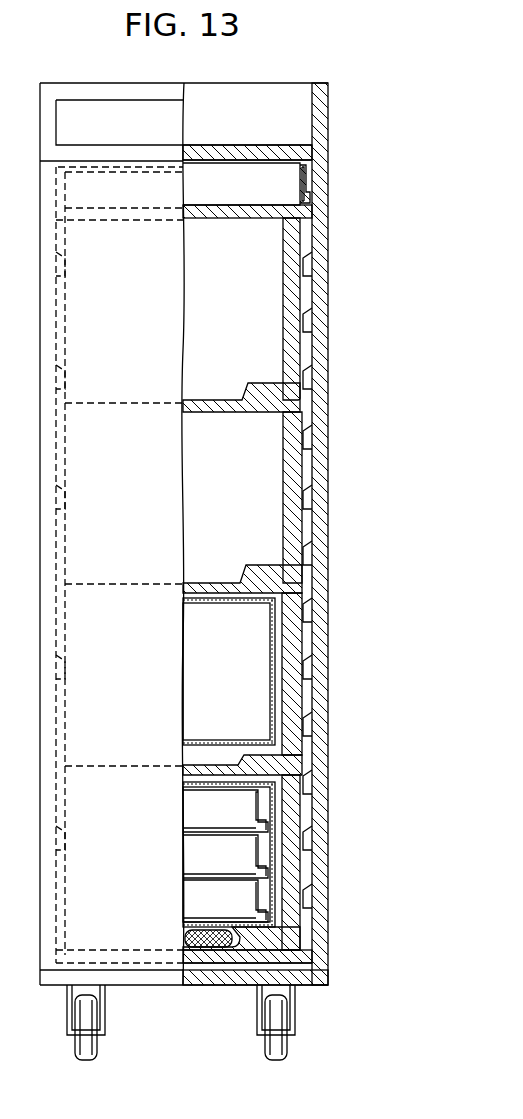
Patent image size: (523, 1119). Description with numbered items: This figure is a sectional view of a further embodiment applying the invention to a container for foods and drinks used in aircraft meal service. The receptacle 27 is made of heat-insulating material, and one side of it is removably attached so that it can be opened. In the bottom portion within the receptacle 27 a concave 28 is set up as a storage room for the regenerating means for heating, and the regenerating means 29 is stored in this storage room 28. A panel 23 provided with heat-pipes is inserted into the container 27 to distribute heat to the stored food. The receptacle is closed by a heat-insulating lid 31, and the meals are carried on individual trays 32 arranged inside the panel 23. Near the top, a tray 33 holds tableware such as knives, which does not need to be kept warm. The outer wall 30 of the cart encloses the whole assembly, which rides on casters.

The panel 23 is at (280, 653).
The receptacle 27 is at (293, 463).
The concave 28 is at (225, 759).
The regenerating means 29 is at (240, 950).
The outer wall 30 is at (316, 329).
The heat-insulating lid 31 is at (250, 218).
The individual trays 32 is at (262, 870).
The tray for tableware 33 is at (305, 188).